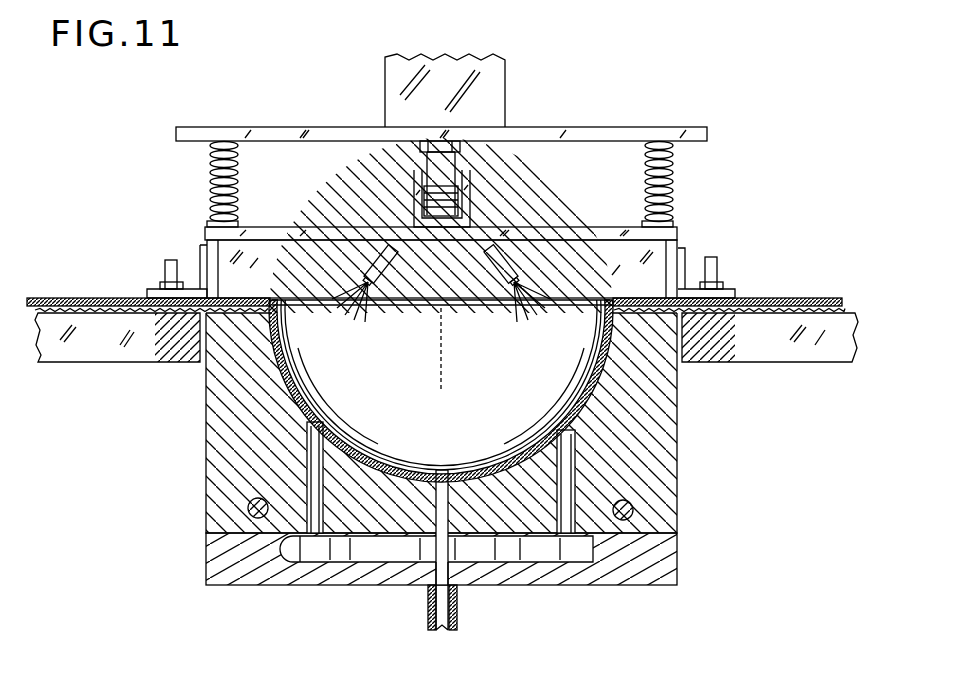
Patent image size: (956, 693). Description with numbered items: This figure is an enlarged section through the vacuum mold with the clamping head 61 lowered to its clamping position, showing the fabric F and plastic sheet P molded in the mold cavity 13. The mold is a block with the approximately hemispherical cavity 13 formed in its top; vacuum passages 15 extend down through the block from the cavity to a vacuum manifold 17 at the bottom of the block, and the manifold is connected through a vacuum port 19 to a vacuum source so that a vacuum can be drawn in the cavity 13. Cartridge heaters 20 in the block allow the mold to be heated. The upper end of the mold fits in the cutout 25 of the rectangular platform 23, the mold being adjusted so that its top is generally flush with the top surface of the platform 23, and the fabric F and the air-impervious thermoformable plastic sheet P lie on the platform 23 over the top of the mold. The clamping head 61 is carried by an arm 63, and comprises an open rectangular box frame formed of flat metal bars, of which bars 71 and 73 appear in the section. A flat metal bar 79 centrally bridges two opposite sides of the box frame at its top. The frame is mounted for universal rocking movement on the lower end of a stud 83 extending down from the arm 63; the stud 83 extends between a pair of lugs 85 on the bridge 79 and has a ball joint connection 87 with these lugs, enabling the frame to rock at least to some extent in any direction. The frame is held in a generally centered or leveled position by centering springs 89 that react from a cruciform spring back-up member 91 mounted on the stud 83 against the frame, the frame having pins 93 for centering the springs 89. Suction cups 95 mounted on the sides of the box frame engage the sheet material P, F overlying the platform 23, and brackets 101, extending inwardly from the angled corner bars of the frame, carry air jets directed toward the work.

The mold cavity 13 is at (285, 382).
The vacuum passages 15 is at (315, 535).
The vacuum manifold 17 is at (495, 552).
The vacuum port 19 is at (430, 600).
The cartridge heaters 20 is at (250, 508).
The platform 23 is at (55, 362).
The cutout 25 is at (210, 348).
The clamping head 61 is at (697, 208).
The arm 63 is at (505, 92).
The flat metal bar 71 is at (457, 281).
The flat metal bar 73 is at (216, 268).
The bridge bar 79 is at (583, 236).
The stud 83 is at (456, 160).
The lugs 85 is at (414, 182).
The ball joint connection 87 is at (458, 200).
The centering springs 89 is at (210, 172).
The spring back-up member 91 is at (612, 130).
The pins 93 is at (210, 223).
The suction cups 95 is at (157, 286).
The bracket 101 is at (362, 262).
The fabric F is at (95, 313).
The plastic sheet P is at (60, 298).